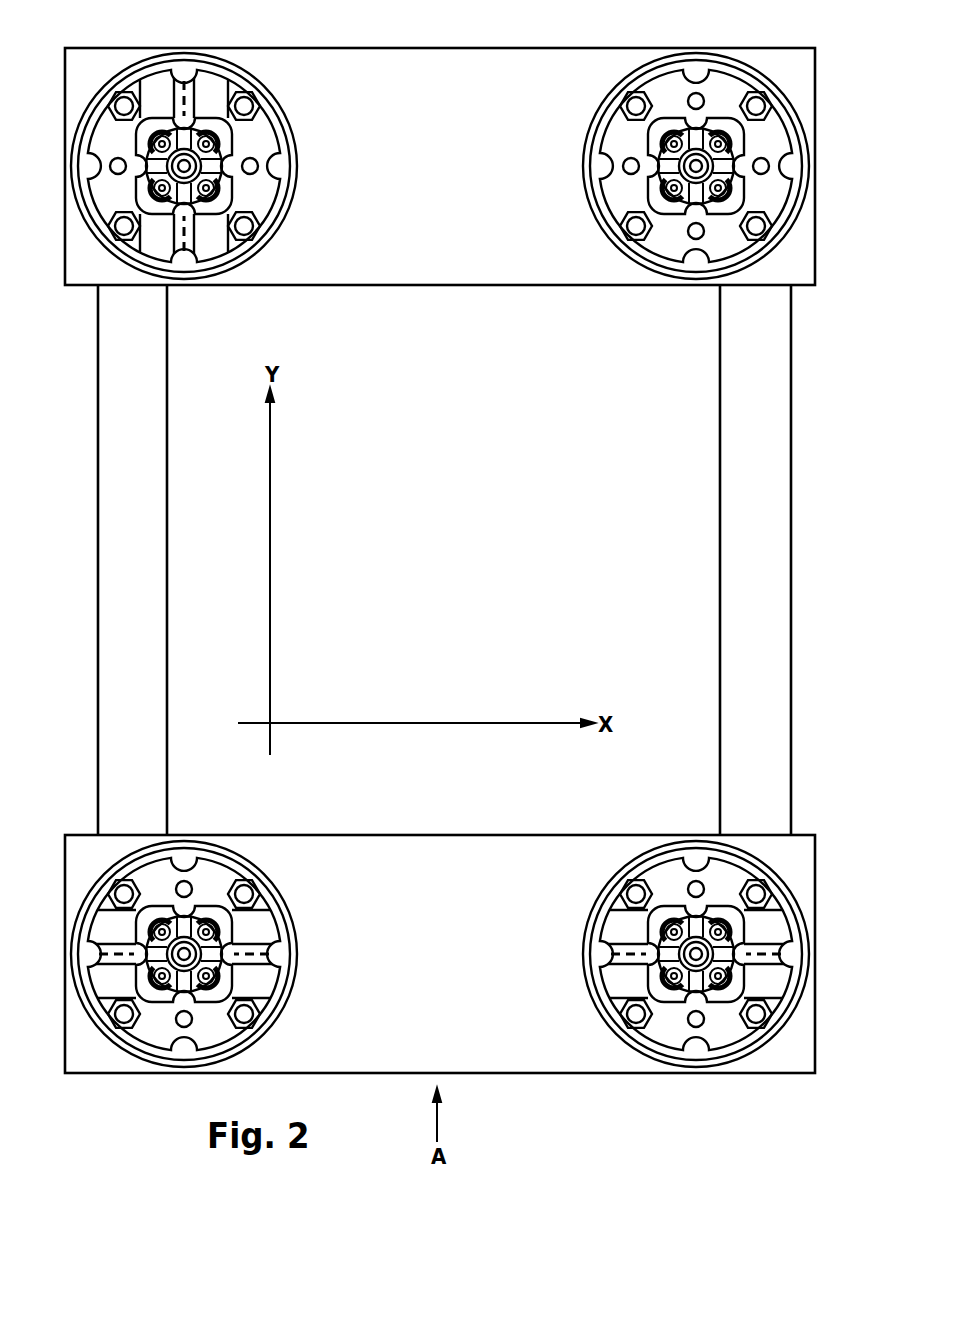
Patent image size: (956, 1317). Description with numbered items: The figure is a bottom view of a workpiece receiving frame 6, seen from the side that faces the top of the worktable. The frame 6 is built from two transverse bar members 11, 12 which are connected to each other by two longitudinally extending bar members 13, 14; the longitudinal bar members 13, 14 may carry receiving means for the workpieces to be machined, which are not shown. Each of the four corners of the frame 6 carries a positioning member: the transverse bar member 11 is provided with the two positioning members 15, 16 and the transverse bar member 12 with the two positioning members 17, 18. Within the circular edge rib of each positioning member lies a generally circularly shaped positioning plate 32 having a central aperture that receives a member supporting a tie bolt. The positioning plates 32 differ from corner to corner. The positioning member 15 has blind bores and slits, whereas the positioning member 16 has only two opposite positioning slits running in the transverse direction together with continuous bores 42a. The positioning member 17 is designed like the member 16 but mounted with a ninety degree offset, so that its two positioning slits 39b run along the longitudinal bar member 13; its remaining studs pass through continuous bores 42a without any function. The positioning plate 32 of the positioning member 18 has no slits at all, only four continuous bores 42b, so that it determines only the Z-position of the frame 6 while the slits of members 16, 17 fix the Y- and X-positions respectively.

The workpiece receiving frame 6 is at (79, 803).
The transverse bar member 11 is at (443, 850).
The transverse bar member 12 is at (446, 270).
The longitudinal bar member 13 is at (152, 545).
The longitudinal bar member 14 is at (720, 528).
The positioning member 15 is at (304, 991).
The positioning member 16 is at (576, 987).
The positioning member 17 is at (228, 184).
The positioning member 18 is at (661, 167).
The positioning plate 32 is at (100, 207).
The positioning slits 39b is at (190, 80).
The continuous bores 42a is at (253, 166).
The continuous bores 42b is at (764, 174).